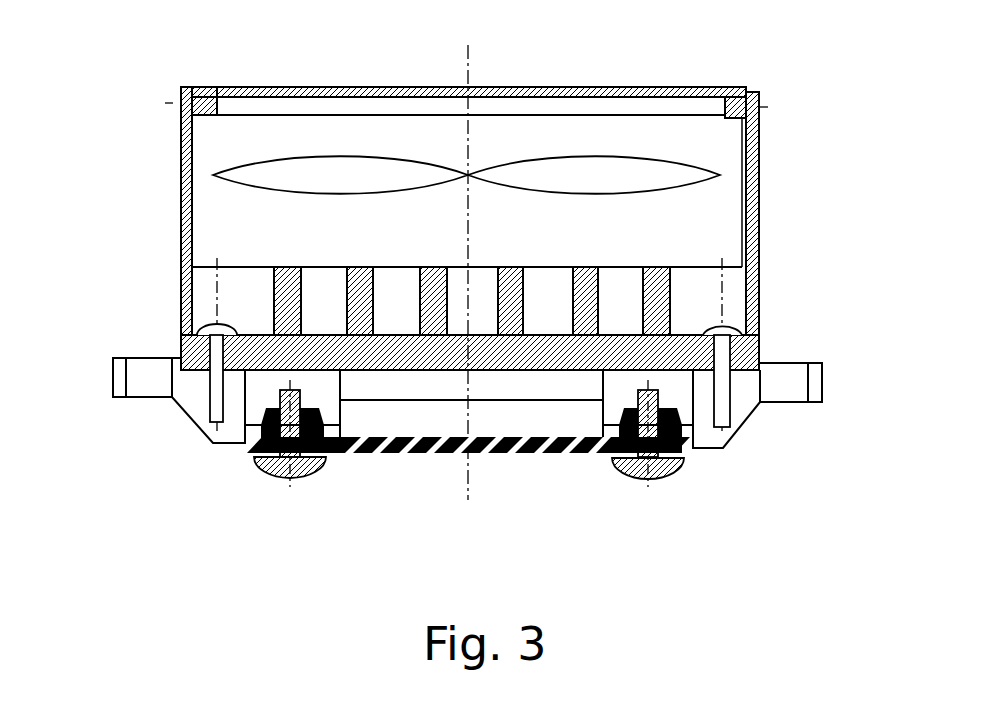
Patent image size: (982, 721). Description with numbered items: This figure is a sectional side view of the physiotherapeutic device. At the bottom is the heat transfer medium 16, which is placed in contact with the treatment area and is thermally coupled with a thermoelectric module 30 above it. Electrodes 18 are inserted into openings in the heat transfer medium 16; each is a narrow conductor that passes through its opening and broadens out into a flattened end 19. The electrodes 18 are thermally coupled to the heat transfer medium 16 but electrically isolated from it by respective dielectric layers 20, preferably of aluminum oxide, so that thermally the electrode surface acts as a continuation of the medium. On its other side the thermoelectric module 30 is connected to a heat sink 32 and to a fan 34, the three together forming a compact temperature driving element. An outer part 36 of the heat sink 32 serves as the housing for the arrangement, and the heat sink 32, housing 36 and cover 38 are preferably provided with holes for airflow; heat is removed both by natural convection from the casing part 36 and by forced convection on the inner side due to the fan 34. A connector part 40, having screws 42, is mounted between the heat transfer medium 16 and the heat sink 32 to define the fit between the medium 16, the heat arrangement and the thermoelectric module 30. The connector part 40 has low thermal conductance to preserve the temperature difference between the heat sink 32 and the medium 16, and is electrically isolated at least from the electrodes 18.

The heat transfer medium 16 is at (368, 457).
The electrodes 18 is at (280, 477).
The flattened end 19 is at (305, 478).
The dielectric layers 20 is at (247, 453).
The thermoelectric module 30 is at (580, 378).
The heat sink 32 is at (287, 328).
The fan 34 is at (673, 177).
The outer part of the heat sink 36 is at (178, 310).
The cover 38 is at (240, 88).
The connector part 40 is at (183, 410).
The screws 42 is at (741, 332).